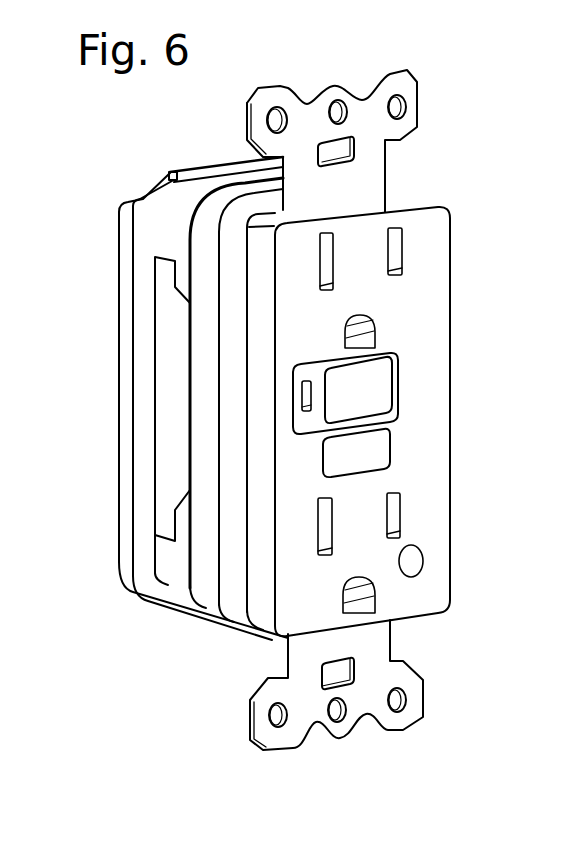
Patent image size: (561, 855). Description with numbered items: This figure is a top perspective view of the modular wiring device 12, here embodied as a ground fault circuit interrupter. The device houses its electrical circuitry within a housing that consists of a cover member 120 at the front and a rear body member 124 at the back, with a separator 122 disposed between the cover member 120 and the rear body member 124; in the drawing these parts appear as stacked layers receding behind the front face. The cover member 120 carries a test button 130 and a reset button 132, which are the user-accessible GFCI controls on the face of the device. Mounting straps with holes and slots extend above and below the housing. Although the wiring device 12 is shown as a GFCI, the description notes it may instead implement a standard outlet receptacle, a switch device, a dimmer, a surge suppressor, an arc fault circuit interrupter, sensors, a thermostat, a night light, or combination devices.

The modular wiring device 12 is at (508, 153).
The cover member 120 is at (430, 258).
The separator 122 is at (191, 206).
The rear body member 124 is at (157, 410).
The test button 130 is at (423, 100).
The reset button 132 is at (380, 382).